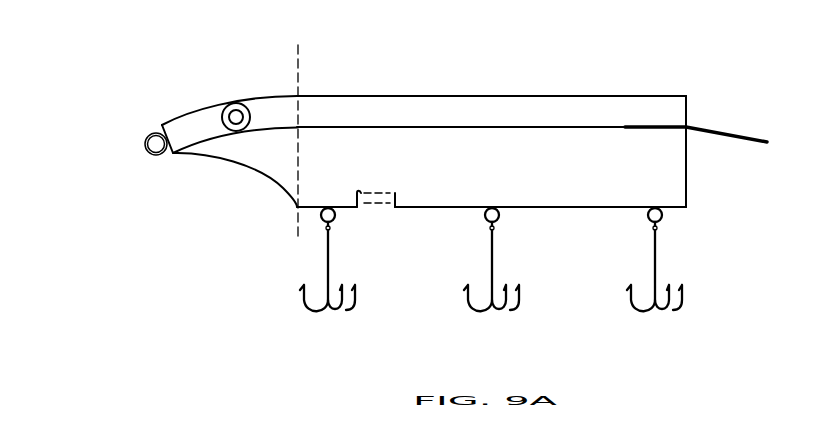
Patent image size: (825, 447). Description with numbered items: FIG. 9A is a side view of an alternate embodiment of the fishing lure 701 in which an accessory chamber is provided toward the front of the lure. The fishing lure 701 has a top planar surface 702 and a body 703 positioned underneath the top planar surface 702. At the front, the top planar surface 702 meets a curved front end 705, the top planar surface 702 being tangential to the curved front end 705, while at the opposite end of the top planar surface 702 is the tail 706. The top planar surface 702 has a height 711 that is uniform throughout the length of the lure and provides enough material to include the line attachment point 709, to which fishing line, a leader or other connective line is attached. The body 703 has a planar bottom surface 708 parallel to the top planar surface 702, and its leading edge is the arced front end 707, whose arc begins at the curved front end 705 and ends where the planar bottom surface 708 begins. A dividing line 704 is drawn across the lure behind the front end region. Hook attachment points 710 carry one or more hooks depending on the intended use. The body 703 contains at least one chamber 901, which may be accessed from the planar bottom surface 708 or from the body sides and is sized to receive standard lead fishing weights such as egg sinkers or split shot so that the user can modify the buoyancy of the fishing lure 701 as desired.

The fishing lure 701 is at (500, 58).
The top planar surface 702 is at (617, 95).
The body 703 is at (686, 172).
The dividing line 704 is at (298, 60).
The curved front end 705 is at (187, 112).
The tail 706 is at (753, 133).
The arced front end 707 is at (263, 173).
The planar bottom surface 708 is at (455, 208).
The line attachment point 709 is at (145, 136).
The hook attachment points 710 is at (323, 222).
The height 711 is at (686, 110).
The chamber 901 is at (380, 208).